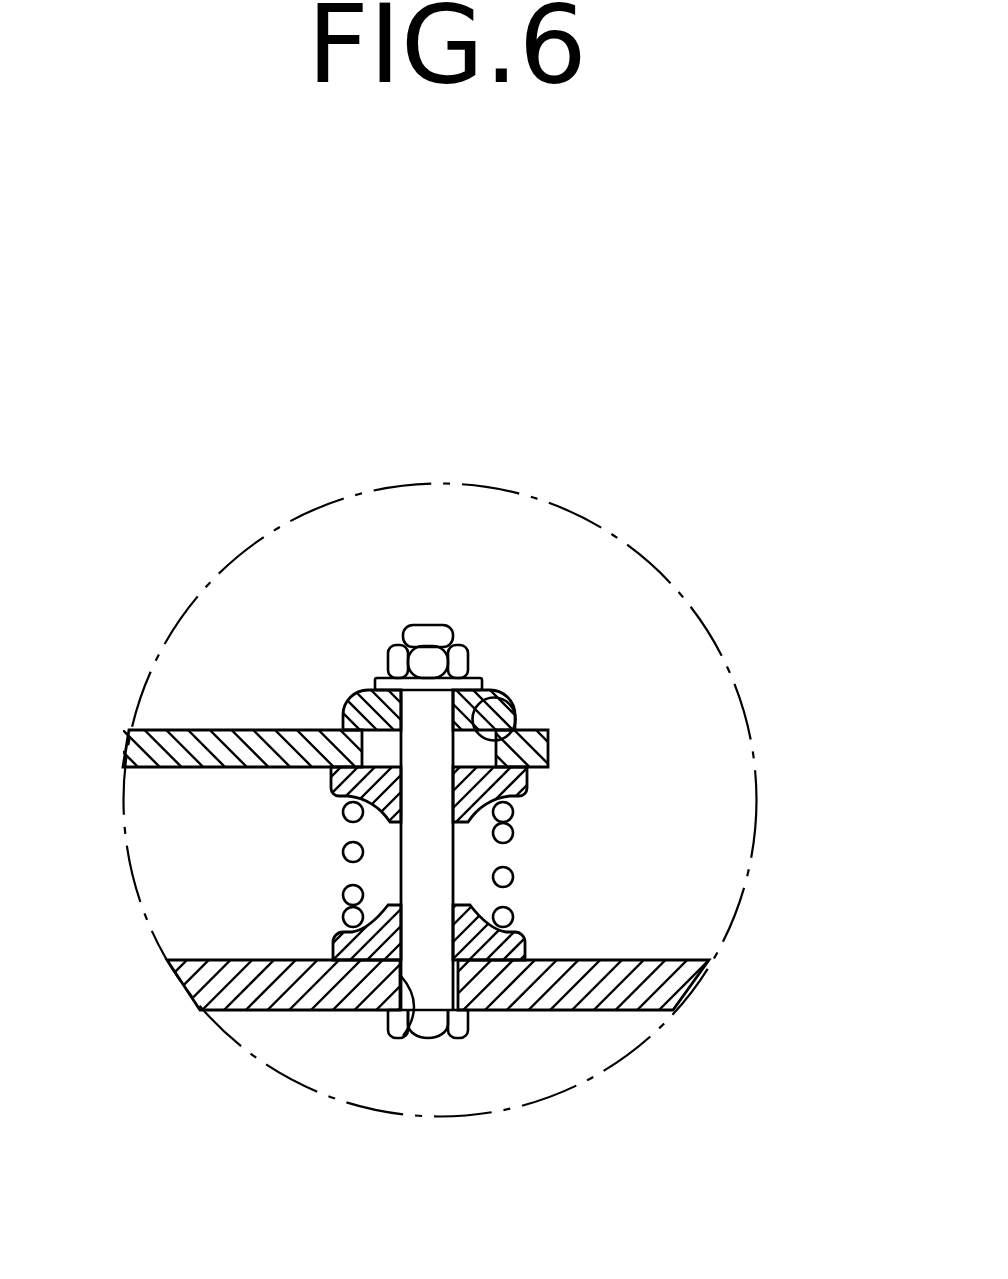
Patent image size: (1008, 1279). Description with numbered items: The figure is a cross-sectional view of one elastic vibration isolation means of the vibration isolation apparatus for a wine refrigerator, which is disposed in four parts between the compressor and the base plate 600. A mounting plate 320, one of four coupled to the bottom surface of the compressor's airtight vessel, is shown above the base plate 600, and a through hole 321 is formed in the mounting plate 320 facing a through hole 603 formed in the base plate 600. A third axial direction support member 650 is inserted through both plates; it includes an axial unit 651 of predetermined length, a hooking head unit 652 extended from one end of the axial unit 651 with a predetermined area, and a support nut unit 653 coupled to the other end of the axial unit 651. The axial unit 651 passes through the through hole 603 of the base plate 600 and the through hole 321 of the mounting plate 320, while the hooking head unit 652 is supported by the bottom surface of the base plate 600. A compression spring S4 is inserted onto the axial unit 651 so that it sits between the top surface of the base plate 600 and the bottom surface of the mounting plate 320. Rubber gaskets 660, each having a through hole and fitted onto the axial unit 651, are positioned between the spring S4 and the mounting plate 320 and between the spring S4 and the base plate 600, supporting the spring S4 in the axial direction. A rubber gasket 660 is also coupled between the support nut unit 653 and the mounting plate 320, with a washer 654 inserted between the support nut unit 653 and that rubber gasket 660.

The mounting plate 320 is at (235, 727).
The through hole 321 is at (500, 693).
The base plate 600 is at (273, 1013).
The through hole 603 is at (408, 1024).
The third axial direction support member 650 is at (455, 1063).
The axial unit 651 is at (437, 855).
The hooking head unit 652 is at (470, 1030).
The support nut unit 653 is at (465, 653).
The washer 654 is at (377, 680).
The rubber gasket 660 is at (343, 700).
The spring S4 is at (333, 850).